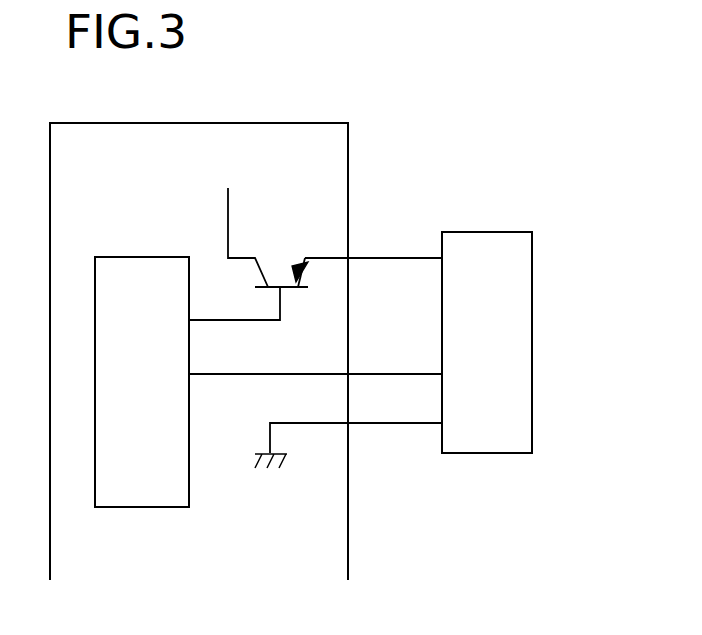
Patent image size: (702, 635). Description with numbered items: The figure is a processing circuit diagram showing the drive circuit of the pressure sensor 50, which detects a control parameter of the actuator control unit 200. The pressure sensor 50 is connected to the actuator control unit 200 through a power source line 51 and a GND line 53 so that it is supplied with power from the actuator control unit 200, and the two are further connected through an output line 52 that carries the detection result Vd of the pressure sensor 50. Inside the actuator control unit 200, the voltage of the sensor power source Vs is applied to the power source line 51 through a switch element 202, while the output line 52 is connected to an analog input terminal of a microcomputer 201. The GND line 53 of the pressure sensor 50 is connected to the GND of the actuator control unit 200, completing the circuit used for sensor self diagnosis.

The actuator control unit 200 is at (349, 131).
The microcomputer 201 is at (126, 257).
The switch element 202 is at (277, 272).
The pressure sensor 50 is at (500, 232).
The power source line 51 is at (393, 257).
The output line 52 is at (420, 374).
The GND line 53 is at (378, 423).